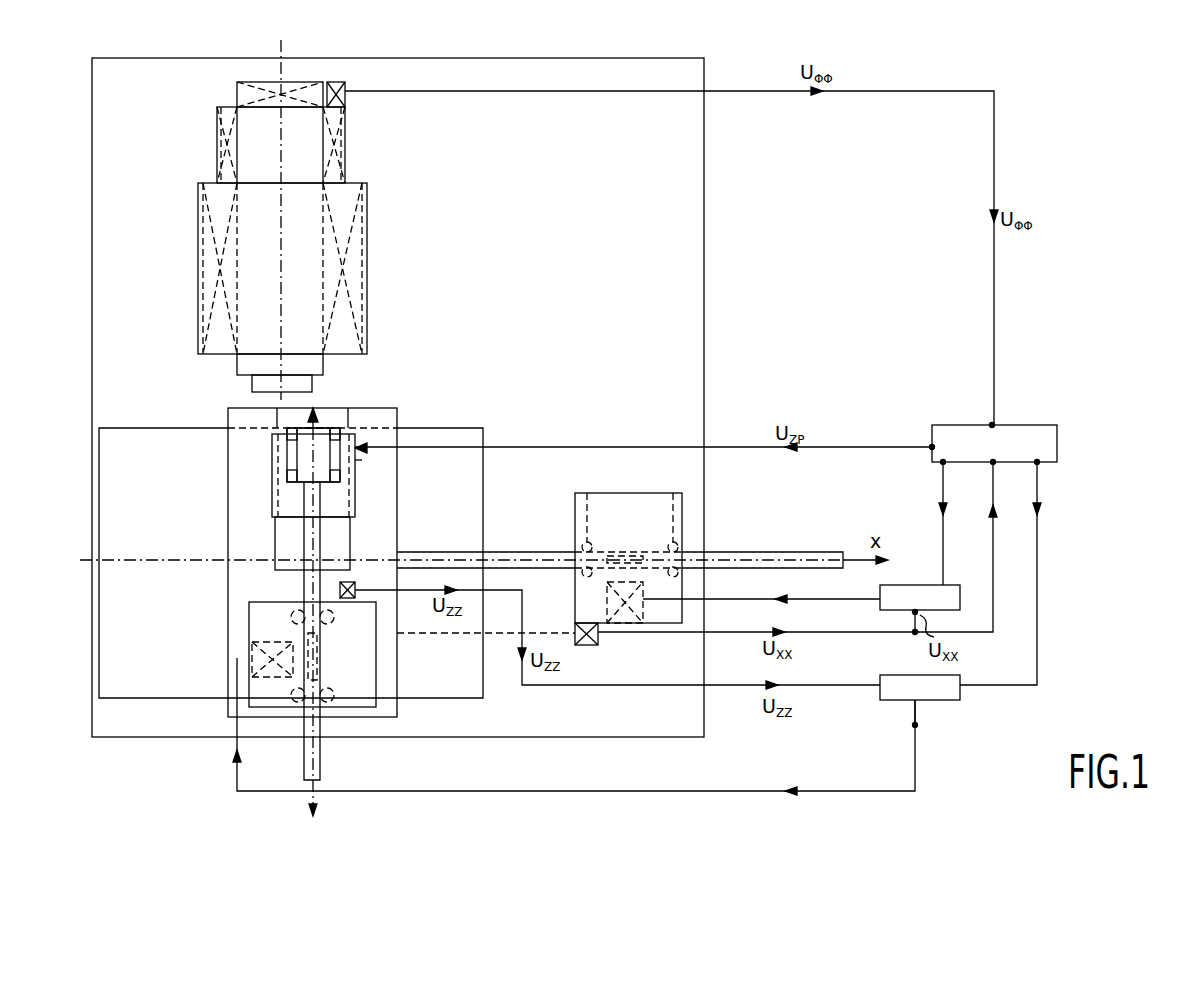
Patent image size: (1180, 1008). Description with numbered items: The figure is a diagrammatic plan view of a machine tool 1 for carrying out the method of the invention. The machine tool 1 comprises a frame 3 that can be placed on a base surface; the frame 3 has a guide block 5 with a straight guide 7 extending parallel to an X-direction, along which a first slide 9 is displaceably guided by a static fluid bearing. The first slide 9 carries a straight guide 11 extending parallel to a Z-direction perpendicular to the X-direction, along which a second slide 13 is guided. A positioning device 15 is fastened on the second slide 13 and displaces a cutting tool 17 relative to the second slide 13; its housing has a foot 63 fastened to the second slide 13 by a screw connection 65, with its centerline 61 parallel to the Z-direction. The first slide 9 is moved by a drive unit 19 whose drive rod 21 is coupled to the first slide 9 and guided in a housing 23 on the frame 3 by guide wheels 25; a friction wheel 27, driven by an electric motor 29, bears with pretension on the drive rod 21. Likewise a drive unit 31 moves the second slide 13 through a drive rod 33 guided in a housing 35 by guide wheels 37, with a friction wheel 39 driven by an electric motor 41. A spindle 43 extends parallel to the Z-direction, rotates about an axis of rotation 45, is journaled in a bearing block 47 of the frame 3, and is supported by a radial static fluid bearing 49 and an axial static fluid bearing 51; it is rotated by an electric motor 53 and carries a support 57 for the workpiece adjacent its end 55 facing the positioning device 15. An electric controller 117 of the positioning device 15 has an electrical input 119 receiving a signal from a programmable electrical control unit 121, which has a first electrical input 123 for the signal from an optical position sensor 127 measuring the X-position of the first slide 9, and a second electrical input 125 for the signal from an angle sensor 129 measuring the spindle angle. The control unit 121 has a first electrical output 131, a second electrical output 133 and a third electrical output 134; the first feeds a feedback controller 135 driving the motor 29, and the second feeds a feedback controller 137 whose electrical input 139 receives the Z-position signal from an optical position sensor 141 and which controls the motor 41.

The machine tool 1 is at (142, 760).
The frame 3 is at (704, 318).
The guide block 5 is at (99, 440).
The straight guide 7 is at (483, 432).
The first slide 9 is at (390, 512).
The straight guide 11 is at (290, 533).
The second slide 13 is at (350, 493).
The positioning device 15 is at (305, 478).
The cutting tool 17 is at (300, 420).
The drive unit 19 is at (620, 540).
The drive rod 21 is at (497, 552).
The housing 23 is at (633, 493).
The guide wheels 25 is at (587, 495).
The friction wheel 27 is at (627, 555).
The electric motor 29 is at (607, 605).
The drive unit 31 is at (320, 631).
The drive rod 33 is at (300, 586).
The housing 35 is at (376, 657).
The guide wheels 37 is at (291, 617).
The friction wheel 39 is at (318, 657).
The electric motor 41 is at (257, 652).
The spindle 43 is at (308, 124).
The axis of rotation 45 is at (300, 333).
The bearing block 47 is at (367, 228).
The radial static fluid bearing 49 is at (330, 265).
The axial static fluid bearing 51 is at (237, 91).
The electric motor 53 is at (345, 152).
The end 55 is at (240, 380).
The support 57 is at (305, 386).
The centerline 61 is at (313, 502).
The foot 63 is at (290, 455).
The screw connection 65 is at (287, 476).
The electric controller 117 is at (360, 460).
The electrical input 119 is at (360, 446).
The electrical control unit 121 is at (1057, 440).
The first electrical input 123 is at (993, 465).
The second electrical input 125 is at (992, 425).
The optical position sensor 127 is at (590, 645).
The angle sensor 129 is at (345, 86).
The first electrical output 131 is at (943, 465).
The second electrical output 133 is at (1037, 465).
The third electrical output 134 is at (932, 447).
The feedback controller 135 is at (922, 585).
The feedback controller 137 is at (945, 700).
The electrical input 139 is at (880, 685).
The optical position sensor 141 is at (350, 585).